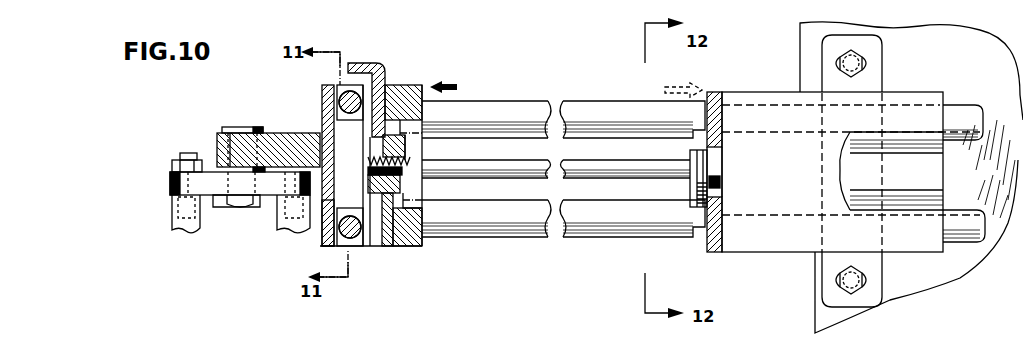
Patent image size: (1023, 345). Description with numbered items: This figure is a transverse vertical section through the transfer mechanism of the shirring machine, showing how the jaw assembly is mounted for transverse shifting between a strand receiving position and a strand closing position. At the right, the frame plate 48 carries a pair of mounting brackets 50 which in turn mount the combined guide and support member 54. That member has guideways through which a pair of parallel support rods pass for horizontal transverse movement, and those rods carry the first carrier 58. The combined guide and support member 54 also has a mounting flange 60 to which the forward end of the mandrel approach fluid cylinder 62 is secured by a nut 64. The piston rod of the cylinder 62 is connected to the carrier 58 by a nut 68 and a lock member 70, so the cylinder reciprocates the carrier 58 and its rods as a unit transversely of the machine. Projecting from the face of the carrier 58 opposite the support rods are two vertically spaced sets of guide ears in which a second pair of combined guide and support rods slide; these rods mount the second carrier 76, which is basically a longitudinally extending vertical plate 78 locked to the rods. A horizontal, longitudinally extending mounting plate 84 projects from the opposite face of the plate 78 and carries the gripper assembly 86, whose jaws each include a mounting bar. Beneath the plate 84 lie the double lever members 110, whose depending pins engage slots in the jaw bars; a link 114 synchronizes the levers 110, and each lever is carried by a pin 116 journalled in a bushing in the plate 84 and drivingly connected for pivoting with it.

The frame plate 48 is at (800, 46).
The mounting bracket 50 is at (872, 80).
The combined guide and support member 54 is at (924, 100).
The first carrier 58 is at (392, 76).
The mounting flange 60 is at (710, 252).
The mandrel approach fluid cylinder 62 is at (758, 187).
The nut 64 is at (694, 212).
The nut 68 is at (403, 183).
The lock member 70 is at (370, 70).
The second carrier 76 is at (318, 122).
The vertical plate 78 is at (322, 244).
The mounting plate 84 is at (268, 134).
The gripper assembly 86 is at (163, 185).
The double lever members 110 is at (213, 192).
The link 114 is at (178, 160).
The pin 116 is at (236, 127).